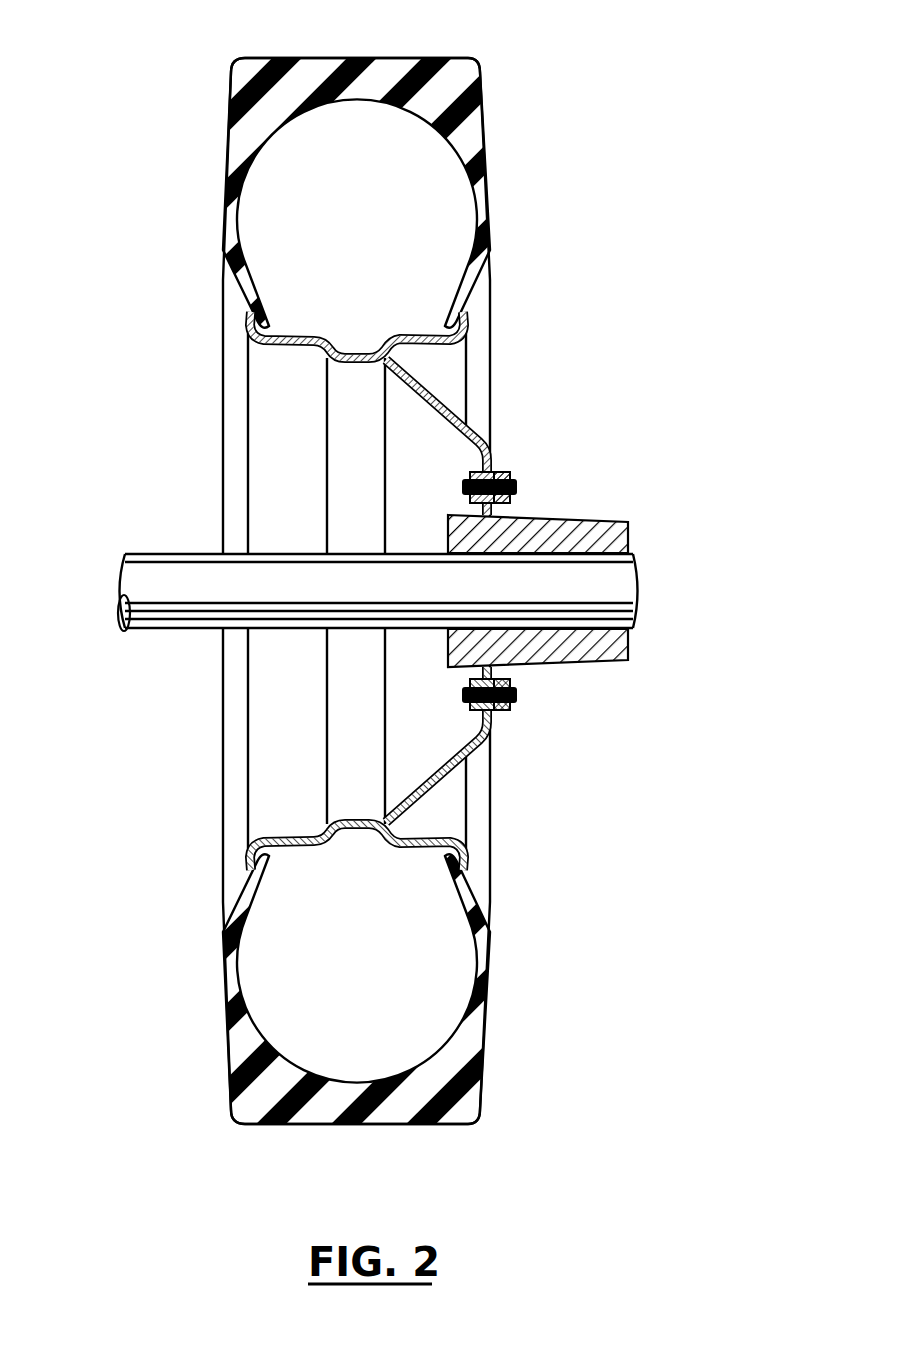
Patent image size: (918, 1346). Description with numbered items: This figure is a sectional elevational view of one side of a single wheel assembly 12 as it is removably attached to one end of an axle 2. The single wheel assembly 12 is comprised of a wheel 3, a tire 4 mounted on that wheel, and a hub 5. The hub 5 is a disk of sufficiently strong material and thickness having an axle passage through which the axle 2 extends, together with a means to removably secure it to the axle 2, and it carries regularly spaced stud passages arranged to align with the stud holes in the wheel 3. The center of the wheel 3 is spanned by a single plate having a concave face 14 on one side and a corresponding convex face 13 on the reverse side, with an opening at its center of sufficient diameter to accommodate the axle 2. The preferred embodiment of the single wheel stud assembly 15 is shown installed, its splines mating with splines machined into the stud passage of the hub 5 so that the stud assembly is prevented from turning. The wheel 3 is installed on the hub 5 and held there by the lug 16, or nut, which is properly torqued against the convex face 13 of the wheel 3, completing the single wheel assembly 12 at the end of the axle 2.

The axle 2 is at (167, 555).
The wheel 3 is at (243, 342).
The tire 4 is at (321, 57).
The hub 5 is at (445, 520).
The single wheel assembly 12 is at (459, 650).
The convex face 13 is at (433, 388).
The concave face 14 is at (413, 400).
The single wheel stud assembly 15 is at (462, 483).
The lug 16 is at (508, 466).